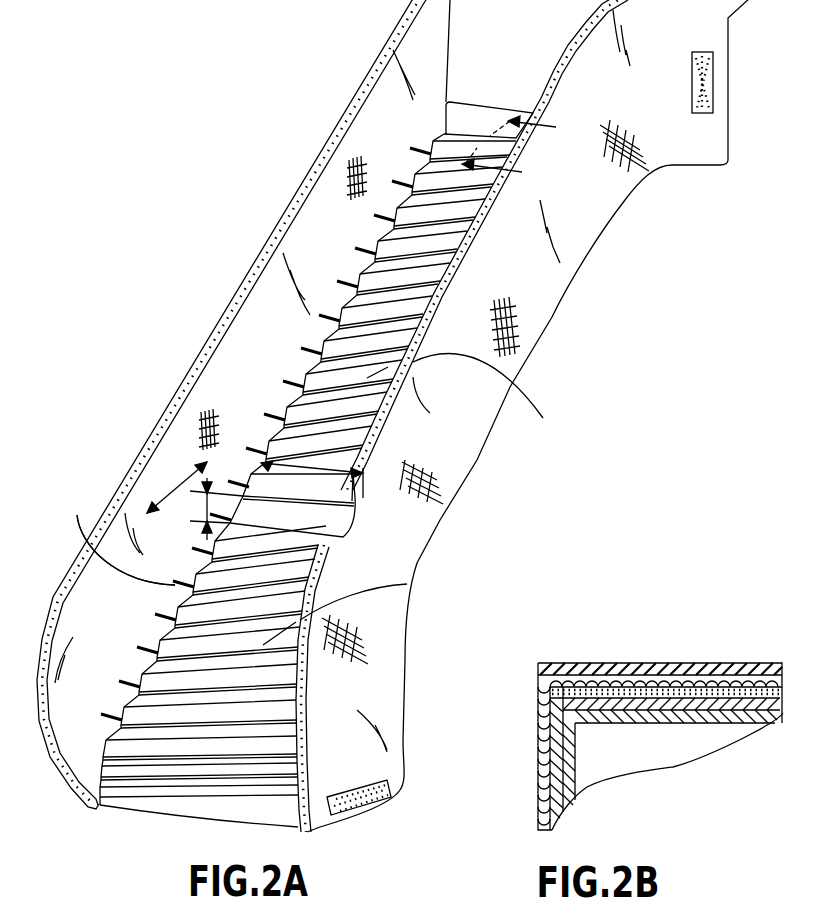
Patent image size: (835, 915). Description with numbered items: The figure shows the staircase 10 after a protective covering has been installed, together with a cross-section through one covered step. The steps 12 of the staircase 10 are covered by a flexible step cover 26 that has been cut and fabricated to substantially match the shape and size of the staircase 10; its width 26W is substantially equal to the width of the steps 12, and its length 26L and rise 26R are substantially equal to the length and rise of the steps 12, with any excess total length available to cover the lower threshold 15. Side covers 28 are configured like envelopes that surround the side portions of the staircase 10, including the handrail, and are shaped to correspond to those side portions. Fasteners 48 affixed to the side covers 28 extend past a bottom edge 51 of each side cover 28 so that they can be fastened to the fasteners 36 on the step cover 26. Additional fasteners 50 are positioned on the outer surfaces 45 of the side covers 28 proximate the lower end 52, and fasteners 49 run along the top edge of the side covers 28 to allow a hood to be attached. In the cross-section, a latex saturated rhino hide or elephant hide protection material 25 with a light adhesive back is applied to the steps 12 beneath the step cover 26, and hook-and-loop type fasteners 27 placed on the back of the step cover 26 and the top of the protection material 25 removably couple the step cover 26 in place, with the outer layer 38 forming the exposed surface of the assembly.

In FIG. 2A, the staircase 10 is at (295, 86).
In FIG. 2B, the steps 12 is at (633, 713).
In FIG. 2A, the lower threshold 15 is at (173, 742).
In FIG. 2B, the protection material 25 is at (720, 700).
In FIG. 2A, the step cover 26 is at (398, 445).
In FIG. 2B, the step cover 26 is at (623, 678).
In FIG. 2A, the width of the step cover 26W is at (261, 460).
In FIG. 2A, the length of the step cover 26L is at (168, 482).
In FIG. 2A, the rise of the step cover 26R is at (207, 506).
In FIG. 2B, the hook-and-loop type fasteners 27 is at (683, 692).
In FIG. 2A, the side covers 28 is at (240, 358).
In FIG. 2A, the fasteners 36 is at (104, 533).
In FIG. 2A, the fasteners 48 is at (126, 550).
In FIG. 2A, the outer layer 38 is at (407, 584).
In FIG. 2B, the outer layer 38 is at (593, 662).
In FIG. 2A, the outer surfaces 45 is at (470, 420).
In FIG. 2A, the fasteners 49 is at (387, 53).
In FIG. 2A, the fasteners 50 is at (712, 80).
In FIG. 2A, the bottom edge 51 is at (478, 467).
In FIG. 2A, the lower end 52 is at (397, 771).